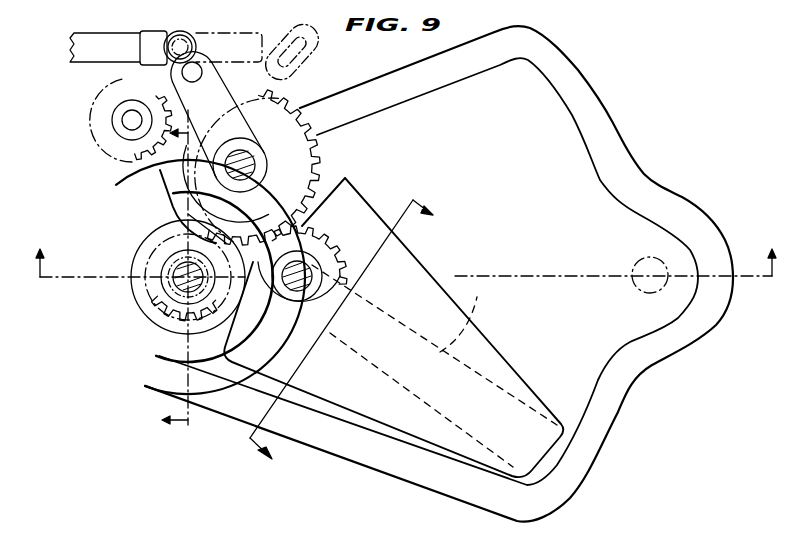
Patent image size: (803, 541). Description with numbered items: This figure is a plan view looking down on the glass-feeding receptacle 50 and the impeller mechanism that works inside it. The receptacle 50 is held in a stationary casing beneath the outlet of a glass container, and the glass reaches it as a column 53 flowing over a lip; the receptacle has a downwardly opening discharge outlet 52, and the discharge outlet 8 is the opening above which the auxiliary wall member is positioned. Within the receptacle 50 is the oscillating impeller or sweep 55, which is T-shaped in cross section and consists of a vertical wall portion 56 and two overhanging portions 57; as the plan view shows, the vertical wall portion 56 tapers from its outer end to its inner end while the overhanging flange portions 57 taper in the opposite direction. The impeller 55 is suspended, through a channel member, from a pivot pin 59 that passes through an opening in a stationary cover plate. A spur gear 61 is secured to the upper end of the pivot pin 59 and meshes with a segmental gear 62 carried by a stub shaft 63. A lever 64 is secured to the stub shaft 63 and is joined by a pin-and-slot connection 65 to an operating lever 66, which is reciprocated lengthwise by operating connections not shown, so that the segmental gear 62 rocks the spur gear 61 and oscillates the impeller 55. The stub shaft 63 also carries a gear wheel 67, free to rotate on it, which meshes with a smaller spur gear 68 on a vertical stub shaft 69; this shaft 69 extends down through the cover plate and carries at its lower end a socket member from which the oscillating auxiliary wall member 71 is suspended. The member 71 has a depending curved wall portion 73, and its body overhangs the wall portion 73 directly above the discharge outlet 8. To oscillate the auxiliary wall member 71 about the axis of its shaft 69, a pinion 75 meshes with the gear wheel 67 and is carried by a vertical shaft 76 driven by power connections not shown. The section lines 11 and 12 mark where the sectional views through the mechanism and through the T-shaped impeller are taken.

The discharge outlet 8 is at (404, 268).
The section line 11- 11 is at (181, 277).
The section line 12- 12 is at (334, 316).
The receptacle 50 is at (606, 119).
The discharge outlet 52 is at (168, 283).
The column 53 is at (633, 265).
The oscillating impeller 55 is at (495, 345).
The vertical wall portion 56 is at (463, 310).
The overhanging portions 57 is at (343, 395).
The pivot pin 59 is at (300, 293).
The spur gear 61 is at (307, 253).
The segmental gear 62 is at (320, 163).
The stub shaft 63 is at (258, 165).
The lever 64 is at (233, 119).
The pin-and-slot connection 65 is at (186, 40).
The operating lever 66 is at (91, 36).
The gear wheel 67 is at (157, 173).
The spur gear 68 is at (118, 358).
The vertical stub shaft 69 is at (158, 312).
The oscillating auxiliary wall member 71 is at (127, 237).
The depending curved wall portion 73 is at (104, 285).
The pinion 75 is at (97, 121).
The vertical shaft 76 is at (130, 123).